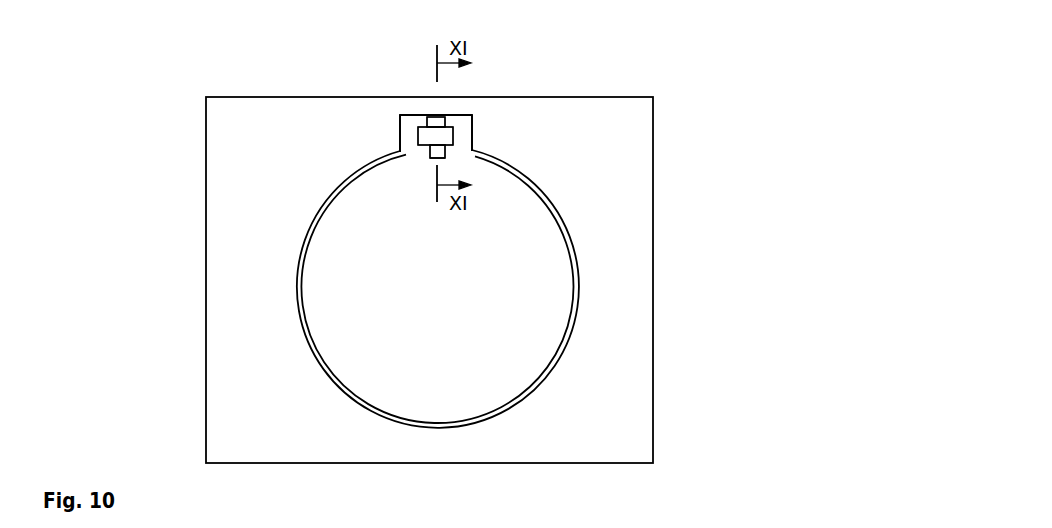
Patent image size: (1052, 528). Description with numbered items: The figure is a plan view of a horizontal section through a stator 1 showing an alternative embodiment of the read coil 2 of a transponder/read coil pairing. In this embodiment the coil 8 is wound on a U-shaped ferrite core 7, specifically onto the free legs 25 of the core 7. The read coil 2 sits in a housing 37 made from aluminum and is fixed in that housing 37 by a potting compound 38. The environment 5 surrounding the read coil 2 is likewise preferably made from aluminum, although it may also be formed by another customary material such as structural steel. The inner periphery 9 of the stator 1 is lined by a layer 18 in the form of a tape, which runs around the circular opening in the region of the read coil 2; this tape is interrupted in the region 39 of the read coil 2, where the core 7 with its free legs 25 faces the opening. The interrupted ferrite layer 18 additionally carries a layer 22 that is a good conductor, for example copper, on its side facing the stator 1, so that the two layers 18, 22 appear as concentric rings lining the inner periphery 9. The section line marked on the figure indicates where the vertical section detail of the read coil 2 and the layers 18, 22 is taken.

The stator 1 is at (200, 89).
The read coil 2 is at (430, 104).
The environment 5 is at (352, 143).
The U-shaped ferrite core 7 is at (459, 110).
The coil 8 is at (470, 122).
The inner periphery 9 is at (326, 295).
The layer 18 is at (577, 234).
The layer 22 is at (540, 176).
The free legs 25 is at (423, 159).
The housing 37 is at (390, 119).
The potting compound 38 is at (478, 137).
The region 39 is at (423, 177).